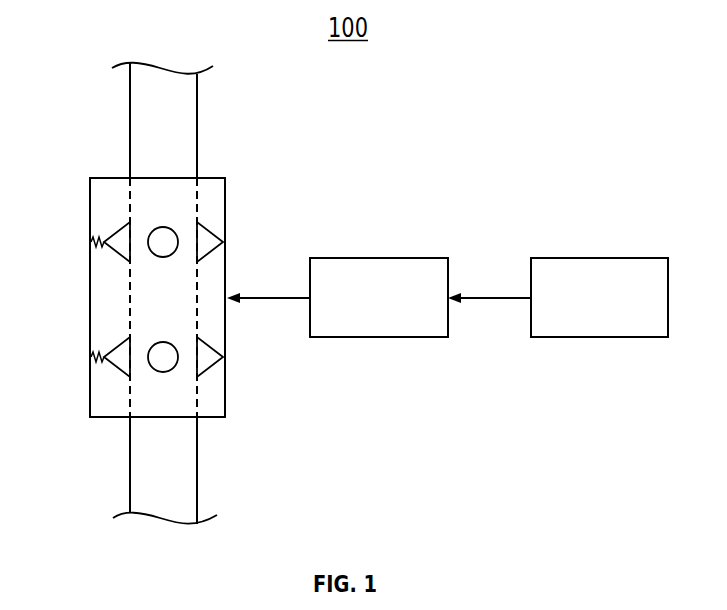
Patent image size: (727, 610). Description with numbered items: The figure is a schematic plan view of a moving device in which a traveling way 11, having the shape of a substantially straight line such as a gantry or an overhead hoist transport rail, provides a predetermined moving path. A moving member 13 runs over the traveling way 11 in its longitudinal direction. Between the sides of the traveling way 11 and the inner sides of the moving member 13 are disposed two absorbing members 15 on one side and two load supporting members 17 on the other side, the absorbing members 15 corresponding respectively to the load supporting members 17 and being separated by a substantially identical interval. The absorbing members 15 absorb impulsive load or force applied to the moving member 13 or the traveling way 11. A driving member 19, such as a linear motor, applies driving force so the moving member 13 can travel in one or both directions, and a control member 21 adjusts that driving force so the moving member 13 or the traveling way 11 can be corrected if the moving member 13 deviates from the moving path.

The traveling way 11 is at (197, 125).
The moving member 13 is at (90, 393).
The absorbing member 15 is at (123, 236).
The load supporting member 17 is at (163, 236).
The driving member 19 is at (377, 337).
The control member 21 is at (600, 337).